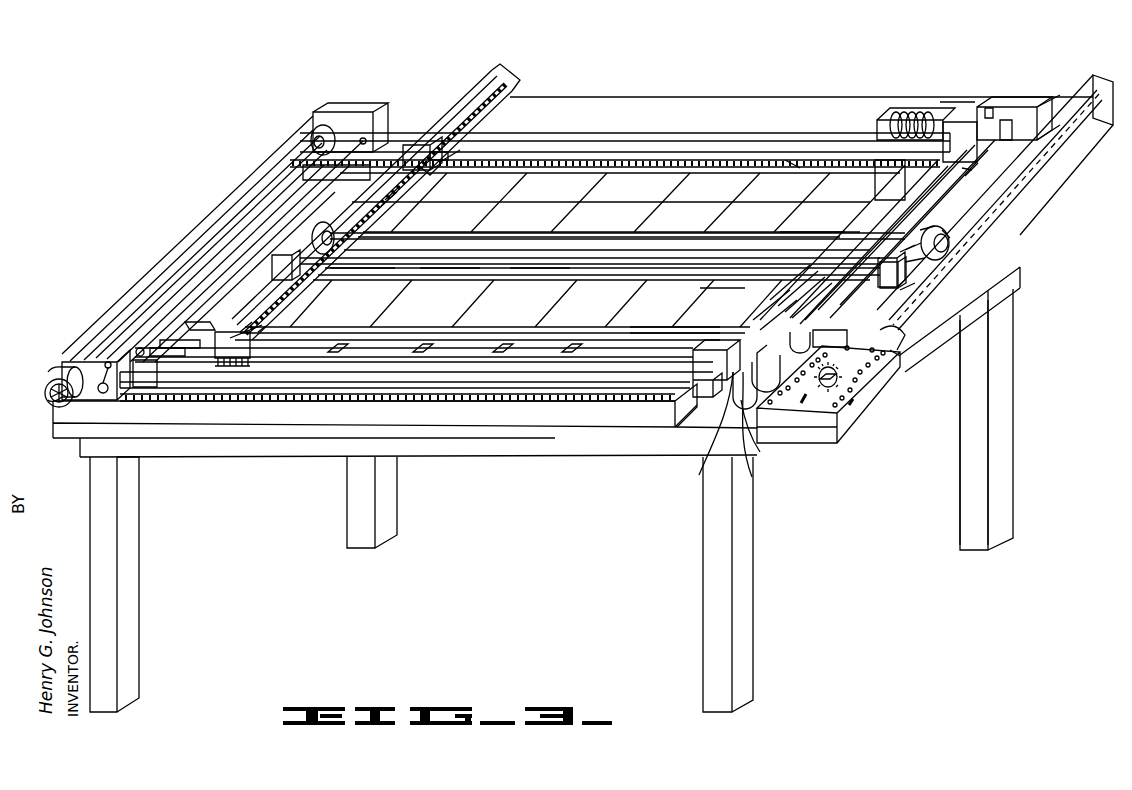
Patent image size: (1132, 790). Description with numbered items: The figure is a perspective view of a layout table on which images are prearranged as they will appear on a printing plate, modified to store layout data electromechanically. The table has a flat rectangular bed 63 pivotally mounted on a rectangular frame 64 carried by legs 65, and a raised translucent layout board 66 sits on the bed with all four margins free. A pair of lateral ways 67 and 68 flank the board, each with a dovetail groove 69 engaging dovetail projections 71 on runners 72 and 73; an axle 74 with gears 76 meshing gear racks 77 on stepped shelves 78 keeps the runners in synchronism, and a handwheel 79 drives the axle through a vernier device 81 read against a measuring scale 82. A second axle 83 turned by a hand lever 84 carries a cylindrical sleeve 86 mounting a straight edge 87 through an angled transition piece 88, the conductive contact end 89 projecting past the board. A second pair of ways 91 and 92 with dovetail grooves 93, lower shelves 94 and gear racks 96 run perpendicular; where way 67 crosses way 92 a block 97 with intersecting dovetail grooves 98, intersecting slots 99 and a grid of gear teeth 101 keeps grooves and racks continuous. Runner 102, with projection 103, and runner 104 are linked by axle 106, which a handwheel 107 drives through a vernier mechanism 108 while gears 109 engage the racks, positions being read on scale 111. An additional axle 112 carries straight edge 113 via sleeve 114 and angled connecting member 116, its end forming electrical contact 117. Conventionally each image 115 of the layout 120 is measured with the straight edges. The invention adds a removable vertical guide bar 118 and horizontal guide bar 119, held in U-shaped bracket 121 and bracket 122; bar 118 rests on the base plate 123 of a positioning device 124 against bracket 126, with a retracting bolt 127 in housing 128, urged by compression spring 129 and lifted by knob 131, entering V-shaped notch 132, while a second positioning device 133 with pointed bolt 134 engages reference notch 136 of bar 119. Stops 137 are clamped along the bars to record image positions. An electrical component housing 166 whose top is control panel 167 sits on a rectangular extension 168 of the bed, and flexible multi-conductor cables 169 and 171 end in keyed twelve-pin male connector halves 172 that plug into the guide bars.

The bed 63 is at (722, 97).
The frame 64 is at (1020, 272).
The legs 65 is at (1005, 348).
The layout board 66 is at (665, 330).
The lateral way 67 is at (1090, 125).
The lateral way 68 is at (508, 80).
The longitudinal groove 69 is at (492, 70).
The dovetail projections 71 is at (290, 282).
The runner 72 is at (905, 268).
The runner 73 is at (318, 224).
The axle 74 is at (585, 228).
The gears 76 is at (380, 232).
The gear rack 77 is at (258, 330).
The stepped shelves 78 is at (395, 200).
The handwheel 79 is at (950, 245).
The vernier device 81 is at (972, 236).
The measuring scale 82 is at (905, 335).
The second axle 83 is at (790, 287).
The hand lever 84 is at (920, 265).
The cylindrical sleeve 86 is at (395, 262).
The straight edge 87 is at (455, 275).
The transition piece 88 is at (545, 275).
The contact end 89 is at (793, 303).
The way 91 is at (290, 427).
The way 92 is at (632, 140).
The dovetail grooves 93 is at (730, 160).
The lower shelf 94 is at (790, 163).
The gear racks 96 is at (878, 165).
The block 97 is at (414, 145).
The intersecting dovetail grooves 98 is at (445, 158).
The intersecting slots 99 is at (426, 168).
The grid of gear teeth 101 is at (447, 165).
The runner 102 is at (95, 400).
The projection 103 is at (125, 400).
The runner 104 is at (345, 110).
The axle 106 is at (207, 247).
The handwheel 107 is at (50, 402).
The vernier mechanism 108 is at (55, 378).
The gears 109 is at (316, 135).
The scale 111 is at (200, 401).
The axle 112 is at (160, 345).
The straight edge 113 is at (273, 243).
The sleeve 114 is at (287, 208).
The image 115 is at (768, 206).
The angled connecting member 116 is at (310, 202).
The electrical contact 117 is at (165, 345).
The vertical guide bar 118 is at (988, 162).
The horizontal guide bar 119 is at (482, 385).
The layout 120 is at (706, 307).
The U-shaped bracket 121 is at (753, 327).
The bracket 122 is at (733, 348).
The base plate 123 is at (955, 140).
The positioning device 124 is at (947, 97).
The bracket 126 is at (1020, 110).
The retracting bolt 127 is at (985, 107).
The housing 128 is at (880, 115).
The compression spring 129 is at (912, 112).
The knob 131 is at (992, 108).
The notch 132 is at (1010, 118).
The second positioning device 133 is at (252, 343).
The retracting pointed bolt 134 is at (192, 325).
The reference notch 136 is at (136, 350).
The stops 137 is at (512, 318).
The electrical component housing 166 is at (912, 360).
The control panel 167 is at (815, 405).
The rectangular extension 168 is at (865, 405).
The flexible multi-conductor cable 169 is at (760, 450).
The flexible multi-conductor cable 171 is at (746, 470).
The male connector half 172 is at (702, 462).